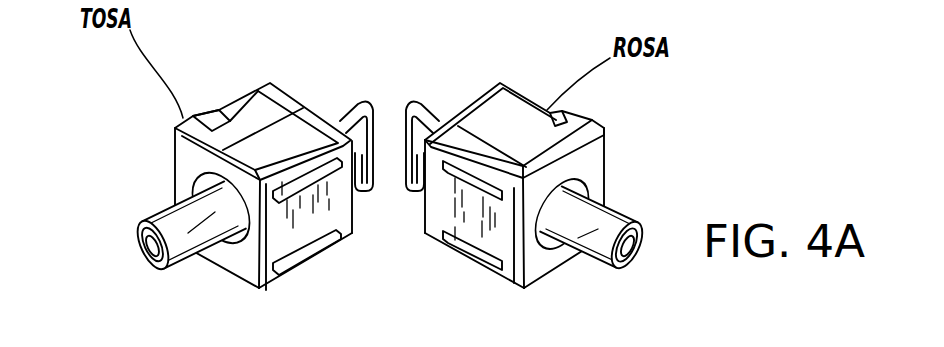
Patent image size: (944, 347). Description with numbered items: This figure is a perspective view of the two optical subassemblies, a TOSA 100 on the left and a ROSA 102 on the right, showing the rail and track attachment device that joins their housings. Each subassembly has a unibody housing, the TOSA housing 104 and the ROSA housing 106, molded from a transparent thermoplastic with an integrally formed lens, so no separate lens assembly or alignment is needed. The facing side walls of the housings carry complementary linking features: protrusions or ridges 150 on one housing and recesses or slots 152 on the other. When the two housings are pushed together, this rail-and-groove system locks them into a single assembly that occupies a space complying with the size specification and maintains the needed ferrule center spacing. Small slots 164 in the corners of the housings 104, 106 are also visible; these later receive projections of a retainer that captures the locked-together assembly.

The TOSA 100 is at (272, 171).
The ROSA 102 is at (567, 182).
The TOSA housing 104 is at (293, 125).
The ROSA housing 106 is at (595, 167).
The protrusions (ridges) 150 is at (326, 177).
The recesses (slots) 152 is at (472, 181).
The slots 164 is at (212, 121).